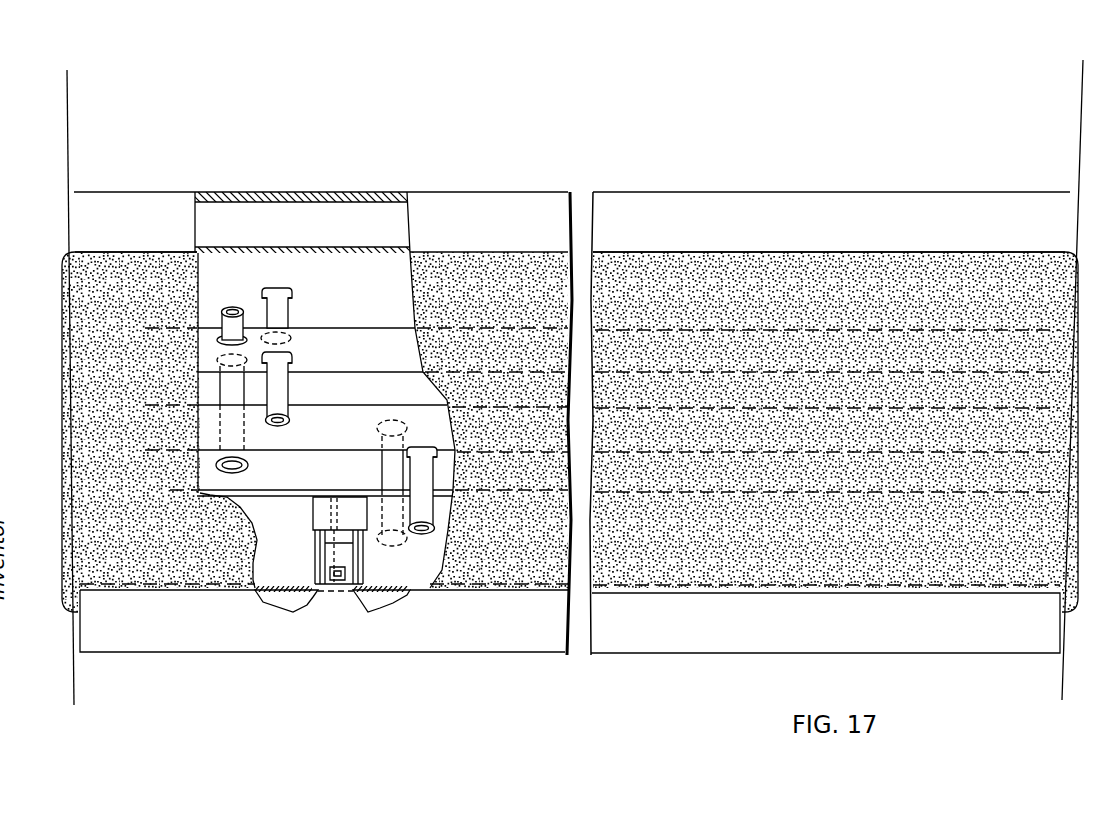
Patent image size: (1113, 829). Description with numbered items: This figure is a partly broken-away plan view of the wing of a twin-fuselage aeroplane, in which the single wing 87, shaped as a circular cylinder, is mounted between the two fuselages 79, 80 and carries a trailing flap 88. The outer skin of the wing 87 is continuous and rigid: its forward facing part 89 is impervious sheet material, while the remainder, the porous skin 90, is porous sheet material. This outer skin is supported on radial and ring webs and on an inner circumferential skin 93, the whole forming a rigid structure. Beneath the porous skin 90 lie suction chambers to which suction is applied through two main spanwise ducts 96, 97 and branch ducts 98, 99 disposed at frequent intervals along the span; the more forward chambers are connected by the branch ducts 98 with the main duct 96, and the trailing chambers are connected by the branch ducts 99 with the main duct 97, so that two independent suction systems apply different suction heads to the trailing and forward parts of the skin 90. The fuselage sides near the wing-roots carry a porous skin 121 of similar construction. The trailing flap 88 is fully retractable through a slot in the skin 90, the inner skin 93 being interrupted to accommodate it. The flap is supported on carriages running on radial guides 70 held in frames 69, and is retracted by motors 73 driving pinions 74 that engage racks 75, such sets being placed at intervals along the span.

The fuselage 79 is at (1074, 133).
The fuselage 80 is at (75, 150).
The wing 87 is at (690, 191).
The trailing flap 88 is at (142, 637).
The forward facing part of the skin 89 is at (140, 205).
The porous skin 90 is at (93, 455).
The inner circumferential skin 93 is at (300, 246).
The main spanwise duct 96 is at (345, 340).
The main spanwise duct 97 is at (334, 422).
The branch duct 98 is at (270, 315).
The branch duct 99 is at (397, 465).
The porous skin 121 is at (70, 423).
The frame 69 is at (327, 508).
The radial guide 70 is at (318, 557).
The motor 73 is at (348, 587).
The pinion 74 is at (330, 588).
The rack 75 is at (330, 540).